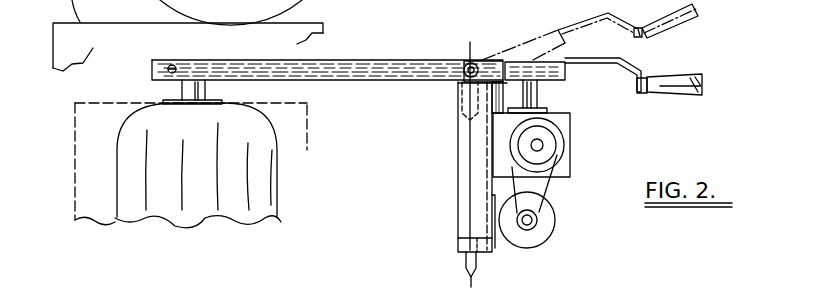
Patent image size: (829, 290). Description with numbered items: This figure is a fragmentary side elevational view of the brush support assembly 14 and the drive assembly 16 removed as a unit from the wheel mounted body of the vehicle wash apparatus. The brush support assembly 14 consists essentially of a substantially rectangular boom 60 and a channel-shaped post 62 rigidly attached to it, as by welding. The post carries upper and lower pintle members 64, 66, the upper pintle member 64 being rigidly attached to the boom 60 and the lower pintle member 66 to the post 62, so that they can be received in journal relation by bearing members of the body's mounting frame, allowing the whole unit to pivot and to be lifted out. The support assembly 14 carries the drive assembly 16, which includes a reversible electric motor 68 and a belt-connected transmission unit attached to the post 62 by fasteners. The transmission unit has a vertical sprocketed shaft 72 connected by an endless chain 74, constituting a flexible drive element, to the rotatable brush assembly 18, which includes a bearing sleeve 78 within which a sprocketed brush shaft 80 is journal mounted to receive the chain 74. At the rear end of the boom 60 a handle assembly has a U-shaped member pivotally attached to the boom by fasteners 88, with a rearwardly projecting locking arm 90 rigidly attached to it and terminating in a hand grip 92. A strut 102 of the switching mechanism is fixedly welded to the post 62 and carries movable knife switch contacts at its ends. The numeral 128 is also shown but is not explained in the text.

The brush support assembly 14 is at (395, 82).
The drive assembly 16 is at (571, 168).
The brush assembly 18 is at (117, 178).
The boom 60 is at (418, 61).
The post 62 is at (355, 79).
The upper pintle member 64 is at (470, 115).
The lower pintle member 66 is at (465, 268).
The reversible electric motor 68 is at (545, 228).
The sprocketed shaft 72 is at (537, 93).
The endless chain 74 is at (285, 61).
The bearing sleeve 78 is at (182, 92).
The sprocketed brush shaft 80 is at (170, 66).
The fasteners 88 is at (478, 63).
The locking arm 90 is at (641, 67).
The hand grip 92 is at (702, 79).
The strut 102 is at (505, 113).
The base 128 is at (647, 283).